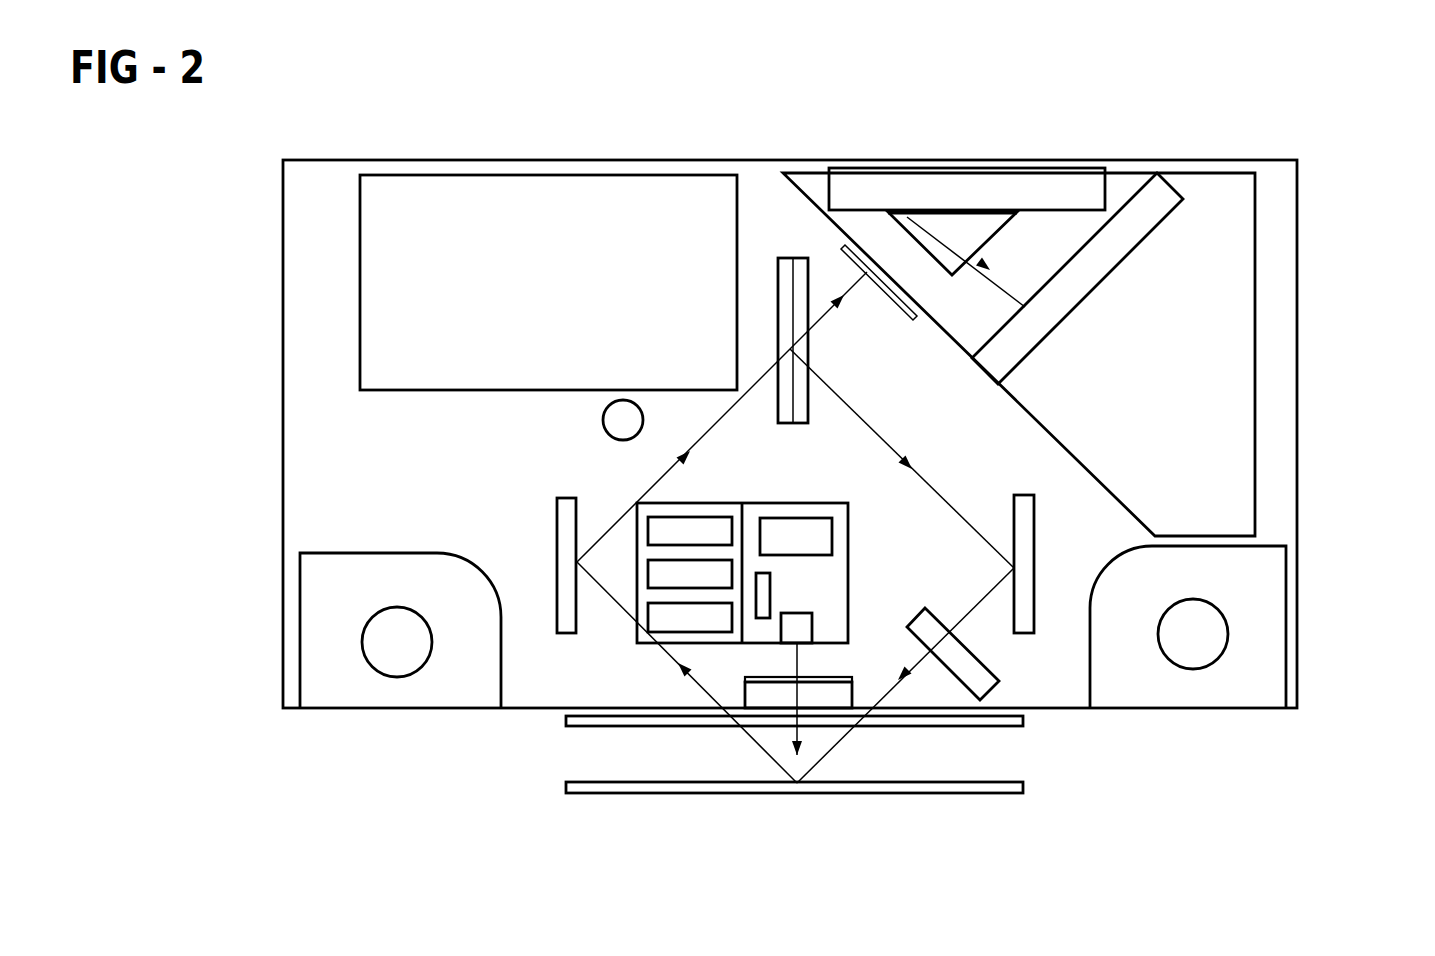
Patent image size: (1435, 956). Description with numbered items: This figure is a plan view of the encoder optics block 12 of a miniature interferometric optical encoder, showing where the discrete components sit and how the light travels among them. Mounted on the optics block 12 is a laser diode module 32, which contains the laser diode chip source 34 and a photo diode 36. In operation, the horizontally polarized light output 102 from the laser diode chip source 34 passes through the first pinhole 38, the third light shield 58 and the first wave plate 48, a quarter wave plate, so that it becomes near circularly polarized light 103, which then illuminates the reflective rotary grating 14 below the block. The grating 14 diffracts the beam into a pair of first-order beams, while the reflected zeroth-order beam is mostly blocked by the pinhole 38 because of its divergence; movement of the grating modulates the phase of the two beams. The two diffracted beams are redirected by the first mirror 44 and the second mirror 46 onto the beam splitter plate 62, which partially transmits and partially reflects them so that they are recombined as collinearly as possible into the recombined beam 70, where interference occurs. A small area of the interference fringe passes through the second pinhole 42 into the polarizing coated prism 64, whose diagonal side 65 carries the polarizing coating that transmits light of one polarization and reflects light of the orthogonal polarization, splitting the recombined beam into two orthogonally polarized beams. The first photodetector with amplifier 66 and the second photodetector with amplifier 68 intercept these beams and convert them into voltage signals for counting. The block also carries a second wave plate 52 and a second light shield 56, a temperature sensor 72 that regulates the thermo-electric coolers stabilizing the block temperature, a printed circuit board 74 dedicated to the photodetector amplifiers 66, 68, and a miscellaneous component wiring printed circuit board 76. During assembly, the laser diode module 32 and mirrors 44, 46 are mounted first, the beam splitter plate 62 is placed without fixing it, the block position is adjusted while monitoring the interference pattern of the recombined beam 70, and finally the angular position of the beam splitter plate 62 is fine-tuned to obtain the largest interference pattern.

The encoder optics block 12 is at (838, 434).
The rotary grating 14 is at (820, 787).
The laser diode module 32 is at (795, 566).
The laser diode chip source 34 is at (803, 547).
The photo diode 36 is at (800, 633).
The first pinhole 38 is at (757, 683).
The second pinhole 42 is at (842, 243).
The first mirror 44 is at (560, 540).
The second mirror 46 is at (1027, 520).
The first wave plate 48 is at (832, 700).
The second wave plate 52 is at (979, 680).
The second light shield 56 is at (790, 660).
The third light shield 58 is at (565, 717).
The beam splitter plate 62 is at (785, 275).
The polarizing coated prism 64 is at (905, 215).
The diagonal side 65 is at (971, 207).
The first photodetector with amplifier 66 is at (1040, 178).
The second photodetector with amplifier 68 is at (1157, 186).
The recombined beam 70 is at (828, 308).
The temperature sensor 72 is at (607, 423).
The printed circuit board 74 is at (1222, 264).
The miscellaneous component wiring printed circuit board 76 is at (528, 207).
The horizontally polarized light output 102 is at (760, 612).
The circularly polarized light 103 is at (793, 765).